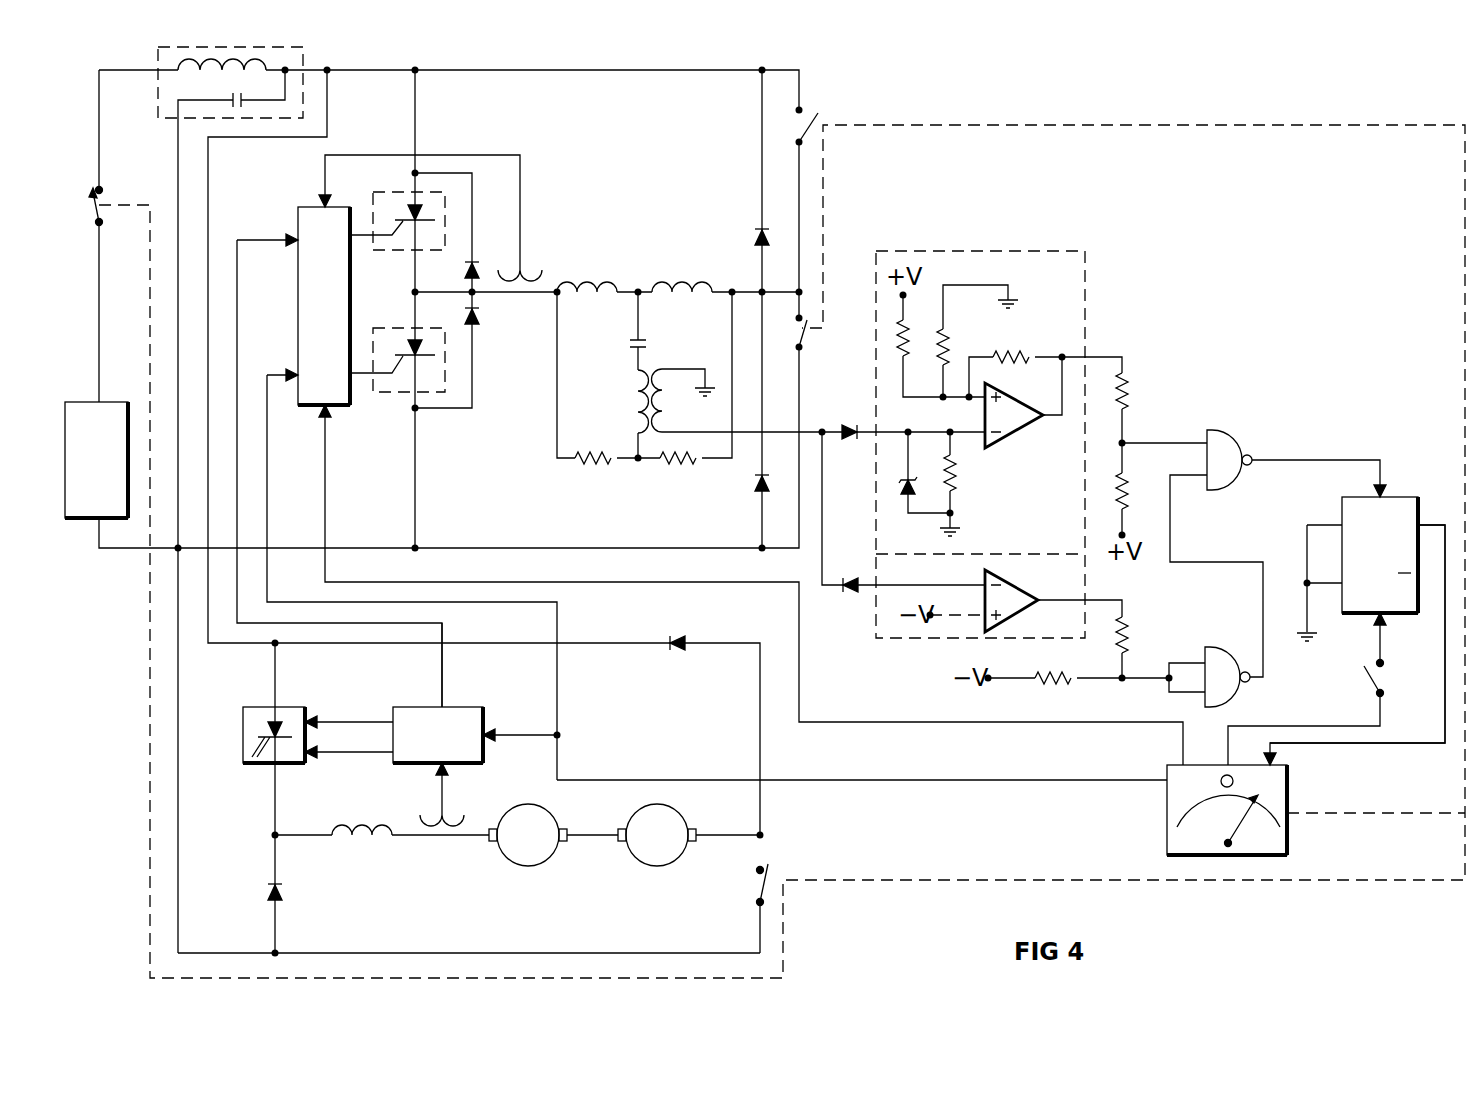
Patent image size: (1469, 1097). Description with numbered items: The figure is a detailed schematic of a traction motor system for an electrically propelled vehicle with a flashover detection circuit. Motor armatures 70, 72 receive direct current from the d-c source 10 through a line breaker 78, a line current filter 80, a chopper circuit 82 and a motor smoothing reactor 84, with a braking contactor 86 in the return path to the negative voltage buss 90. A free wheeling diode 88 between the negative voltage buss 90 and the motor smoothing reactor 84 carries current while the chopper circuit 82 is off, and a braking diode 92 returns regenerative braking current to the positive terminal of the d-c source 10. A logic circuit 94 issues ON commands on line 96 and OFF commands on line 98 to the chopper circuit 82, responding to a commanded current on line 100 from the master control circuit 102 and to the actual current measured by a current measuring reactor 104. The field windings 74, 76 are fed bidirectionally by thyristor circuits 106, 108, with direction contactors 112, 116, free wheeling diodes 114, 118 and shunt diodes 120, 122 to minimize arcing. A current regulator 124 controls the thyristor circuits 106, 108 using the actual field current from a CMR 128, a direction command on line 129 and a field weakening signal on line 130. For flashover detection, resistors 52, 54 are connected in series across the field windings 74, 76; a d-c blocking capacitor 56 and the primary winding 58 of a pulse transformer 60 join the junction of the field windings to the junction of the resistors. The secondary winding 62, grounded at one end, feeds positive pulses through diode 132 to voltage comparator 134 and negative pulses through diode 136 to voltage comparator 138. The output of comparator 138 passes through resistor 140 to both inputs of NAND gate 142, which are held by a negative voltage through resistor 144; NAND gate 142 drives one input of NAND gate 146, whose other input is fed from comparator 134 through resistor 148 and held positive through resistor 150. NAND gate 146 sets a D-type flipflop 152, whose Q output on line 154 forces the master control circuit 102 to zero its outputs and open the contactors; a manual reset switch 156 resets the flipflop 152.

The d-c source 10 is at (88, 402).
The resistor 52 is at (682, 466).
The resistor 54 is at (600, 466).
The d-c blocking capacitor 56 is at (626, 347).
The primary winding 58 is at (634, 417).
The pulse transformer 60 is at (658, 373).
The secondary winding 62 is at (692, 404).
The motor armature 70 is at (524, 866).
The motor armature 72 is at (666, 866).
The field winding 74 is at (600, 278).
The field winding 76 is at (694, 282).
The line breaker 78 is at (92, 196).
The line current filter 80 is at (156, 106).
The chopper circuit 82 is at (250, 704).
The motor smoothing reactor 84 is at (374, 840).
The braking contactor 86 is at (752, 892).
The free wheeling diode 88 is at (264, 896).
The negative voltage buss 90 is at (558, 954).
The braking diode 92 is at (670, 638).
The logic circuit 94 is at (476, 710).
The line 96 is at (378, 712).
The line 98 is at (330, 755).
The line 100 is at (742, 780).
The master control circuit 102 is at (1164, 826).
The current measuring reactor 104 is at (464, 816).
The thyristor circuit 106 is at (388, 197).
The thyristor circuit 108 is at (385, 395).
The direction contactor 112 is at (810, 335).
The free wheeling diode 114 is at (478, 320).
The direction contactor 116 is at (820, 110).
The free wheeling diode 118 is at (465, 272).
The diode 120 is at (752, 482).
The diode 122 is at (754, 230).
The current regulator 124 is at (341, 316).
The CMR 128 is at (542, 280).
The line 129 is at (326, 484).
The line 130 is at (443, 665).
The diode 132 is at (850, 442).
The voltage comparator 134 is at (1037, 501).
The diode 136 is at (850, 594).
The voltage comparator 138 is at (1074, 586).
The resistor 140 is at (1130, 632).
The NAND gate 142 is at (1234, 652).
The resistor 144 is at (1074, 684).
The NAND gate 146 is at (1236, 436).
The resistor 148 is at (1130, 388).
The resistor 150 is at (1130, 500).
The D-type flipflop 152 is at (1404, 494).
The line 154 is at (1388, 745).
The manual reset switch 156 is at (1382, 683).